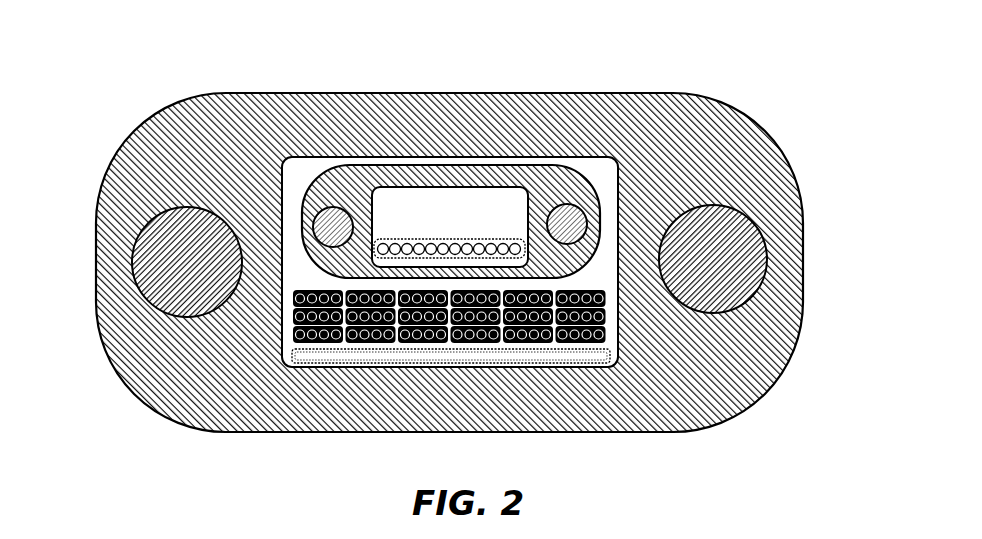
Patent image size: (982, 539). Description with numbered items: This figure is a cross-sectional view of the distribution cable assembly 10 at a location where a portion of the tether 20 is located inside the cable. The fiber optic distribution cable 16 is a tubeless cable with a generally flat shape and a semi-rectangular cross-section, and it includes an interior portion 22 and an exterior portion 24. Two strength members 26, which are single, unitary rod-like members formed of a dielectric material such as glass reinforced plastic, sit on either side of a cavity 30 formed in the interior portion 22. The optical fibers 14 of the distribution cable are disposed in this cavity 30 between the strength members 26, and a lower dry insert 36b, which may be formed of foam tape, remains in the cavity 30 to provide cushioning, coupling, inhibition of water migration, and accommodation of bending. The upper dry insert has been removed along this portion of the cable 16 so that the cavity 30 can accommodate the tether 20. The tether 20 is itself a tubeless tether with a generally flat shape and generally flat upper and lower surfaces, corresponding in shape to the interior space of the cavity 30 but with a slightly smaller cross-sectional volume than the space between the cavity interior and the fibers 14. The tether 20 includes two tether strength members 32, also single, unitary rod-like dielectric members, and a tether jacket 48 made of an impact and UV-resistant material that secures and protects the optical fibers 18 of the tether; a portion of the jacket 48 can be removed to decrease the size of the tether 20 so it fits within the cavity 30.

The distribution cable assembly 10 is at (449, 264).
The optical fibers 14 is at (316, 343).
The fiber optic distribution cable 16 is at (565, 402).
The optical fibers of the tether 18 is at (472, 247).
The tether 20 is at (360, 167).
The interior portion 22 is at (620, 200).
The exterior portion 24 is at (437, 93).
The strength members 26 is at (134, 252).
The cavity 30 is at (557, 145).
The tether strength members 32 is at (322, 210).
The lower dry insert 36b is at (597, 357).
The tether jacket 48 is at (485, 187).